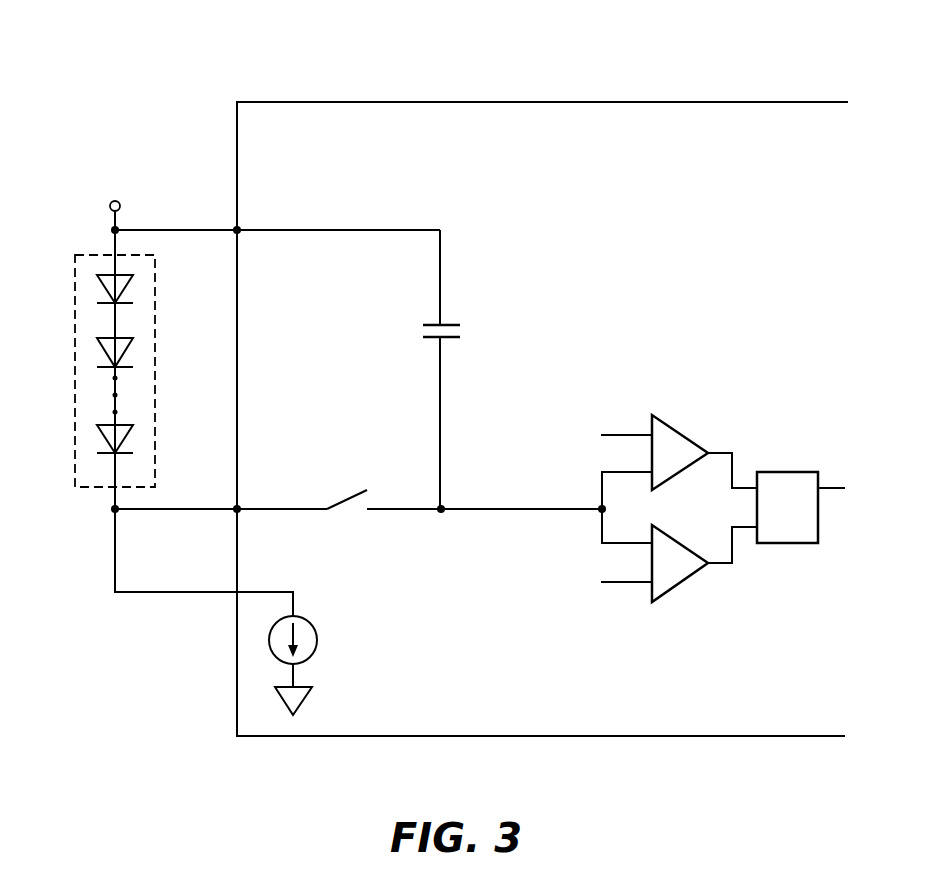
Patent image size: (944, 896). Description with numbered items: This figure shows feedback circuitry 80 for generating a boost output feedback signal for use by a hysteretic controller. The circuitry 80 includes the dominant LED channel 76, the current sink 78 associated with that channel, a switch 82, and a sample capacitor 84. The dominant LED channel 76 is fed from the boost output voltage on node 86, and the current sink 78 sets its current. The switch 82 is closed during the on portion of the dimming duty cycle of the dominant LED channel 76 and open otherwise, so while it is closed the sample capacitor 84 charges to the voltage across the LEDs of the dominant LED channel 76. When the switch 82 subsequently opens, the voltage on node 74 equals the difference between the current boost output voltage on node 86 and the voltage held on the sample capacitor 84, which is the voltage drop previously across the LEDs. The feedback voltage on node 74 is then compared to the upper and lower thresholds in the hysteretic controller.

The feedback circuitry 80 is at (142, 46).
The node 86 is at (108, 206).
The dominant LED channel 76 is at (155, 320).
The sample capacitor 84 is at (452, 342).
The switch 82 is at (354, 497).
The node 74 is at (441, 514).
The current sink 78 is at (311, 626).